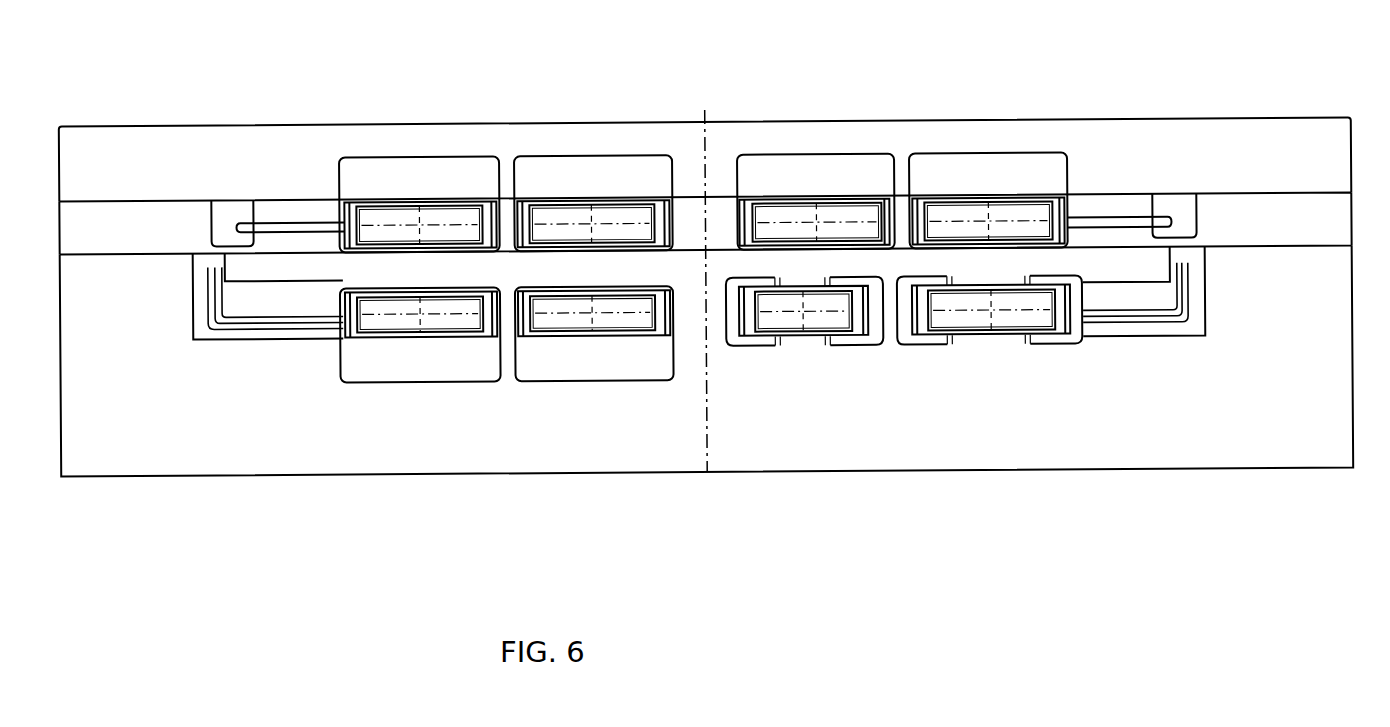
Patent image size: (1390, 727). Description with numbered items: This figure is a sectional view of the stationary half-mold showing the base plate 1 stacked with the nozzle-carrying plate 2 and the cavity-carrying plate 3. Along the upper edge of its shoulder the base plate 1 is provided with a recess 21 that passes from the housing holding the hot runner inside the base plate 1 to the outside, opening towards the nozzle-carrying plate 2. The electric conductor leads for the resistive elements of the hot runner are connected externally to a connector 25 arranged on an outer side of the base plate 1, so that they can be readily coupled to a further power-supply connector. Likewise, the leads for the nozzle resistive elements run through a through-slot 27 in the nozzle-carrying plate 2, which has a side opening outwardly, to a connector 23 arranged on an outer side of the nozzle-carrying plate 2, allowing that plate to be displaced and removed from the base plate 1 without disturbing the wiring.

The base plate 1 is at (1245, 440).
The nozzle-carrying plate 2 is at (1313, 237).
The cavity-carrying plate 3 is at (1175, 136).
The recess 21 is at (205, 257).
The connector 23 is at (549, 216).
The connector 25 is at (400, 318).
The through-slot 27 is at (223, 210).